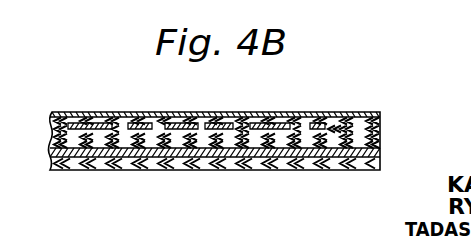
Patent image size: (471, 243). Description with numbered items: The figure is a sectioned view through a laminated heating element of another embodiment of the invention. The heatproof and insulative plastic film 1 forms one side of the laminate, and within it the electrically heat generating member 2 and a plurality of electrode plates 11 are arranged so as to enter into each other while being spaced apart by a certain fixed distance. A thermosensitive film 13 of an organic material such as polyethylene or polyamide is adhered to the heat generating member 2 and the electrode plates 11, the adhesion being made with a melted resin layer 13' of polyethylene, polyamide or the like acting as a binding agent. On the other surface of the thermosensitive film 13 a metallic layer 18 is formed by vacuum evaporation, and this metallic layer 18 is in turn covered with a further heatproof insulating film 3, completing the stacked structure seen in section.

The heatproof and insulative plastic film 1 is at (353, 113).
The electrically heat generating member 2 is at (267, 122).
The heatproof insulating film 3 is at (323, 168).
The electrode plate 11 is at (312, 122).
The thermosensitive film 13 is at (239, 154).
The melted resin layer 13' is at (243, 126).
The metallic layer 18 is at (382, 158).